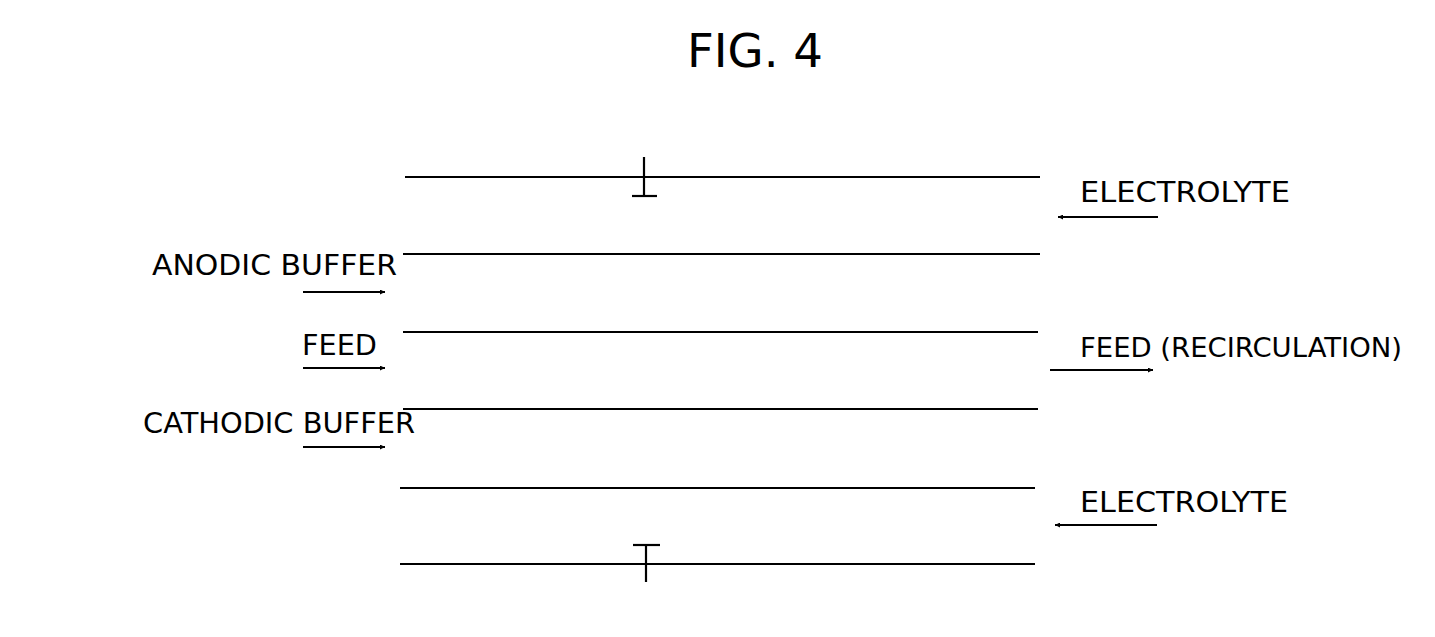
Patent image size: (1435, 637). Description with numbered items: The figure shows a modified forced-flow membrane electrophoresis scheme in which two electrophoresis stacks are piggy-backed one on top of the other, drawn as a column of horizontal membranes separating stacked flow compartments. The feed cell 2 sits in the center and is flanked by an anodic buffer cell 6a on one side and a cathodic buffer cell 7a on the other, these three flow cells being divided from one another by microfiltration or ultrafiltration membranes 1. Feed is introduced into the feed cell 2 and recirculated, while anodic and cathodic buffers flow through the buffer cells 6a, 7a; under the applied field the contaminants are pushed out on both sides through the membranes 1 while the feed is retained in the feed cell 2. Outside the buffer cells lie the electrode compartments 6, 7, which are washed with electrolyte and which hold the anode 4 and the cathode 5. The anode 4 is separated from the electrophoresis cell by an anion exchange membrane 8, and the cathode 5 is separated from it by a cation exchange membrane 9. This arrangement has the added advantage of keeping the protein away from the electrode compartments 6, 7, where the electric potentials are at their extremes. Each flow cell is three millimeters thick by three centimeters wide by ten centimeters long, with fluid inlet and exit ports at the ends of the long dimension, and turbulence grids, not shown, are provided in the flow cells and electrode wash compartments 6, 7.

The microfiltration membranes 1 is at (736, 370).
The feed cell 2 is at (720, 370).
The anode 4 is at (634, 161).
The cathode 5 is at (637, 581).
The electrode compartment 6 is at (721, 215).
The anodic buffer cell 6a is at (721, 293).
The electrode compartment 7 is at (717, 526).
The cathodic buffer cell 7a is at (719, 448).
The anion exchange membrane 8 is at (735, 253).
The cation exchange membrane 9 is at (732, 490).